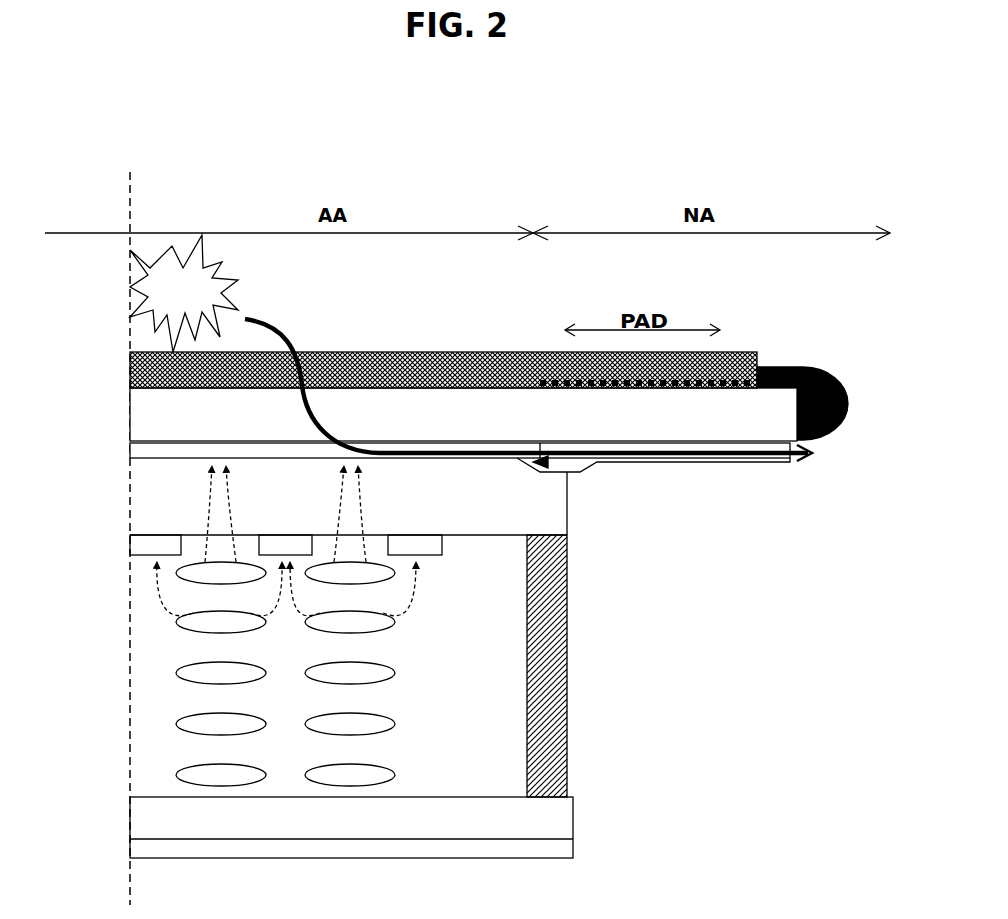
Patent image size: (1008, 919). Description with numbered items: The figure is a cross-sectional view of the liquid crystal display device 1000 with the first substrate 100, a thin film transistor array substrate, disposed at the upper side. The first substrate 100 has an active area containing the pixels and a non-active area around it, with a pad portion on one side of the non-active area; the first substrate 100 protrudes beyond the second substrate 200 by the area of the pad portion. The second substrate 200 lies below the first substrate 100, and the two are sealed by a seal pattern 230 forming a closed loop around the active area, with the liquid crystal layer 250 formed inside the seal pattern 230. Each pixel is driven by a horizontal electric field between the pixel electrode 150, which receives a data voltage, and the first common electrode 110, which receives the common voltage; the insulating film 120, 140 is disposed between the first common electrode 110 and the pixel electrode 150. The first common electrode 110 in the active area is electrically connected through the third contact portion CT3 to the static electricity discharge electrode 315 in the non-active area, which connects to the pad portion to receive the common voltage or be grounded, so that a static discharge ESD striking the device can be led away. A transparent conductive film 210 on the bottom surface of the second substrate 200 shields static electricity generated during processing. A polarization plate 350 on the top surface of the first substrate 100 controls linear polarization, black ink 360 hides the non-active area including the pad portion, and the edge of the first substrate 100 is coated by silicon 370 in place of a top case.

The liquid crystal display device 1000 is at (135, 127).
The first substrate 100 is at (140, 420).
The first common electrode 110 is at (138, 452).
The insulating film 120 is at (140, 503).
The insulating film 140 is at (348, 496).
The pixel electrode 150 is at (130, 547).
The second substrate 200 is at (140, 812).
The transparent conductive film 210 is at (138, 846).
The seal pattern 230 is at (565, 668).
The liquid crystal layer 250 is at (153, 619).
The static electricity discharge electrode 315 is at (660, 463).
The polarization plate 350 is at (130, 372).
The black ink 360 is at (748, 350).
The silicon 370 is at (803, 370).
The third contact portion CT3 is at (545, 465).
The electrostatic discharge ESD is at (184, 293).